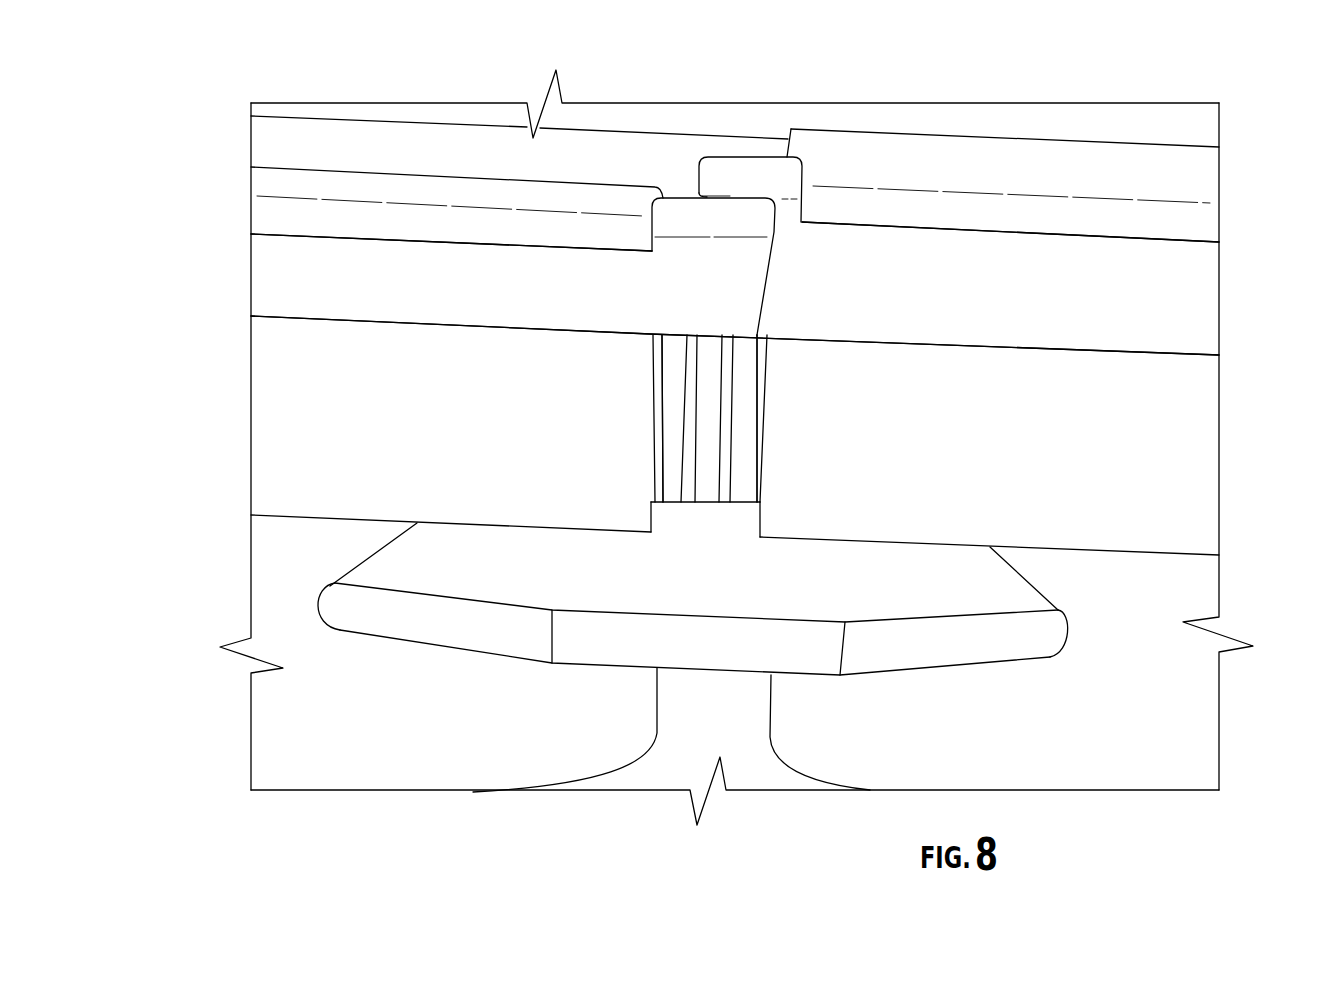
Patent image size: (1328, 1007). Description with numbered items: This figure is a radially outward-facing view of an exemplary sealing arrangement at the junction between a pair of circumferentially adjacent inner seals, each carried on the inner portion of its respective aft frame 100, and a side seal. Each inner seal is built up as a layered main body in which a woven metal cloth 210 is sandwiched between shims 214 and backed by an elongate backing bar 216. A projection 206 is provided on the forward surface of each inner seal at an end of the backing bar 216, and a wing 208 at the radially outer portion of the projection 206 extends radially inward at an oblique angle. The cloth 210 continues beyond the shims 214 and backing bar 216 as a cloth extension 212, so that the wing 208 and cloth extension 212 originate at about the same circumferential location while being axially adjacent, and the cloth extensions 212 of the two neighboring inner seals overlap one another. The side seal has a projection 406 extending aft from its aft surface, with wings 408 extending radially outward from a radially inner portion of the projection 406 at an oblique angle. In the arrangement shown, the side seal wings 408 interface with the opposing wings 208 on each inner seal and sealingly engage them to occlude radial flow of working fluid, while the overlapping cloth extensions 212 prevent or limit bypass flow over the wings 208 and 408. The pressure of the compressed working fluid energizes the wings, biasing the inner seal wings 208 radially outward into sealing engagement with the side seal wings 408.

The aft frame 100 is at (277, 732).
The projection 206 is at (655, 478).
The wing 208 is at (673, 355).
The cloth 210 is at (268, 264).
The cloth extension 212 is at (683, 213).
The shims 214 is at (267, 208).
The backing bar 216 is at (270, 418).
The projection 406 is at (711, 343).
The wings 408 is at (725, 497).